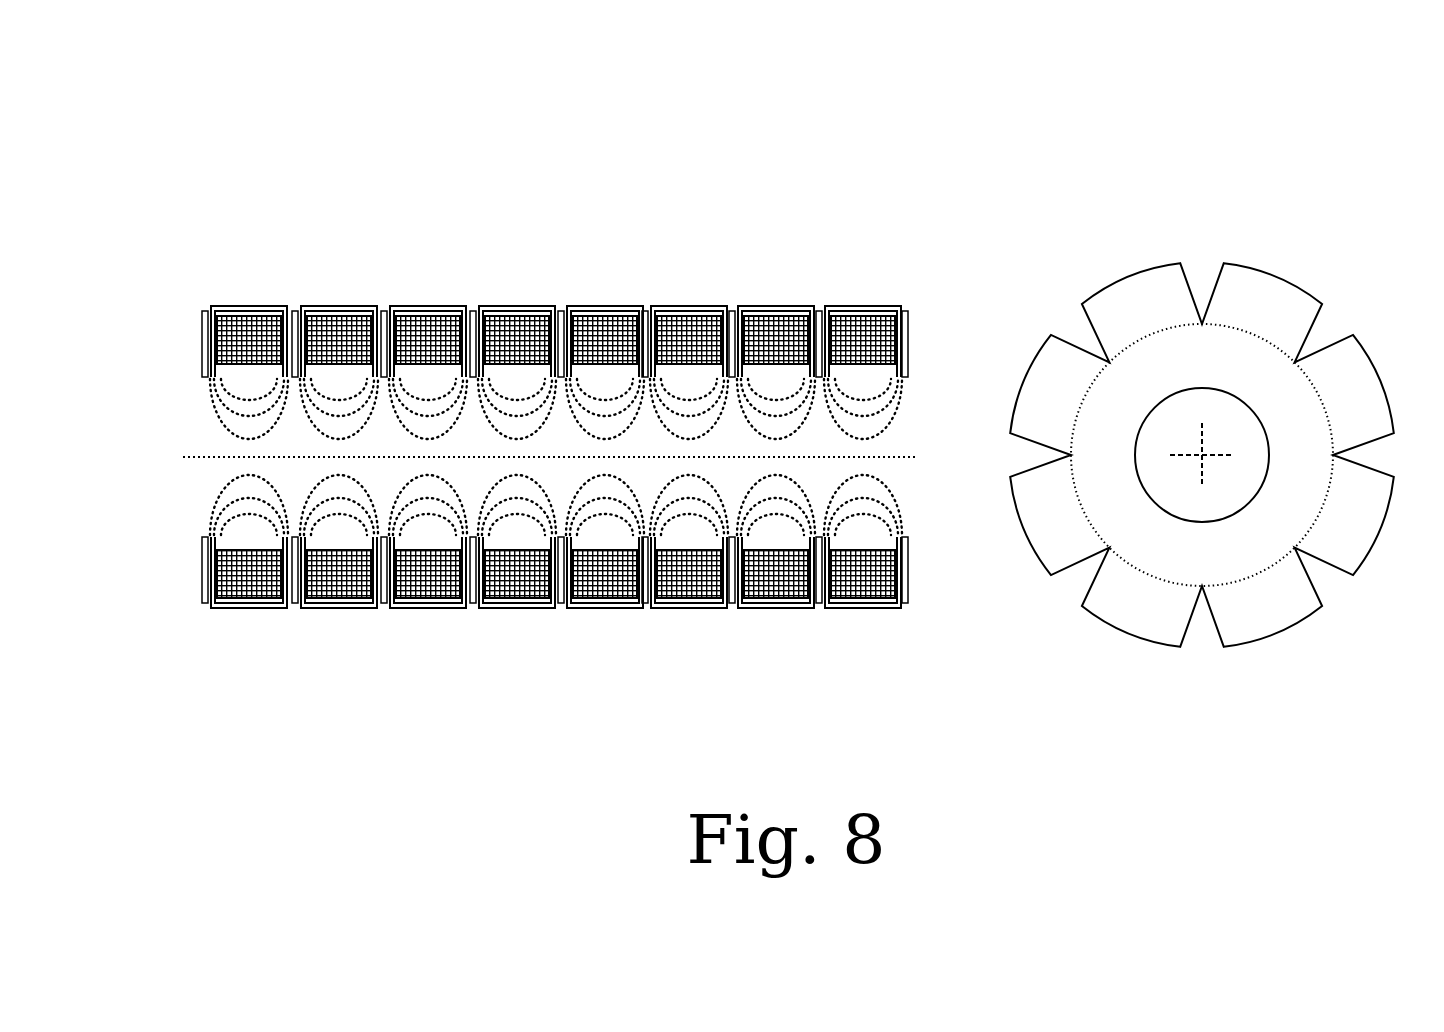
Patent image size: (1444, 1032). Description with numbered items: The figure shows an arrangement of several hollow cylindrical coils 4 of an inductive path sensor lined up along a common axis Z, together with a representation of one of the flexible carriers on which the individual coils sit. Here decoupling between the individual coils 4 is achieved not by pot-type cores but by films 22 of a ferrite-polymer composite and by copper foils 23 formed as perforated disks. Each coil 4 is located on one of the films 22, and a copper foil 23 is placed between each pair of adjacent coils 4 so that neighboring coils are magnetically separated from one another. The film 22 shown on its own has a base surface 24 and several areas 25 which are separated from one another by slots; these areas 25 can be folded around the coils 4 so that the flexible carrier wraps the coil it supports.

The hollow cylindrical coil 4 is at (345, 322).
The film of a ferrite-polymer composite 22 is at (677, 608).
The copper foil 23 is at (820, 318).
The base surface 24 is at (1260, 527).
The area 25 is at (1233, 282).
The axis Z is at (197, 457).